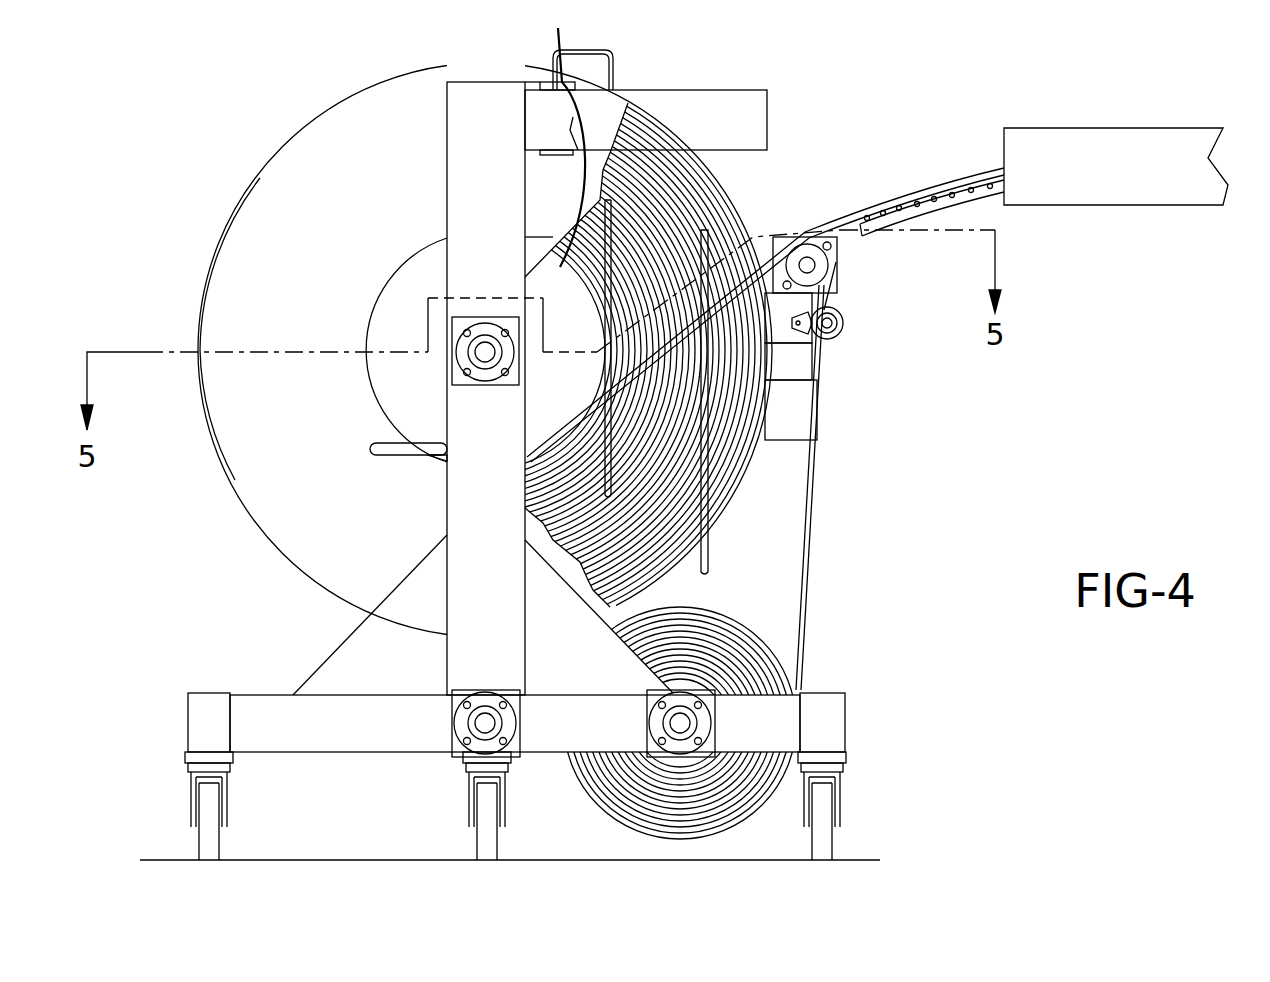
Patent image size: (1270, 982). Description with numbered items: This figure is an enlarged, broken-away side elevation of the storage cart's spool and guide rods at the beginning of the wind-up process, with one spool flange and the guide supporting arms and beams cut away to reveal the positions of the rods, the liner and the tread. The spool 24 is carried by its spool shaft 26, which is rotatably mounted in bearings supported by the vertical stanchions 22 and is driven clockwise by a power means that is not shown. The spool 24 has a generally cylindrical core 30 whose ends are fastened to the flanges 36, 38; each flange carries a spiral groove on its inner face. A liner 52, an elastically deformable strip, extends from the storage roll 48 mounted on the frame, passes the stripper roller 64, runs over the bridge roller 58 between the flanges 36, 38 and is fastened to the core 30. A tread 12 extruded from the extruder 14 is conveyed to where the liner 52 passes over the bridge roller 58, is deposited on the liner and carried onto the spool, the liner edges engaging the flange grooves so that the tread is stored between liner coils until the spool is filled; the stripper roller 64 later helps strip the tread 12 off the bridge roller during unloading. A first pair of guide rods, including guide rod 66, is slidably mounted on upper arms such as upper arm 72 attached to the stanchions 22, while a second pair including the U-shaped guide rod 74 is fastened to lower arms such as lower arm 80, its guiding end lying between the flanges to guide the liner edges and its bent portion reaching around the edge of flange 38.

The tread 12 is at (905, 190).
The extruder 14 is at (1085, 192).
The stanchions 22 is at (465, 110).
The spool 24 is at (263, 248).
The spool shaft 26 is at (483, 355).
The core 30 is at (563, 133).
The flange 36 is at (733, 482).
The flange 38 is at (293, 167).
The storage roll 48 is at (750, 673).
The liner 52 is at (733, 328).
The bridge roller 58 is at (810, 265).
The stripper roller 64 is at (835, 330).
The guide rod 66 is at (597, 48).
The upper arm 72 is at (737, 110).
The guide rod 74 is at (703, 547).
The lower arm 80 is at (785, 423).